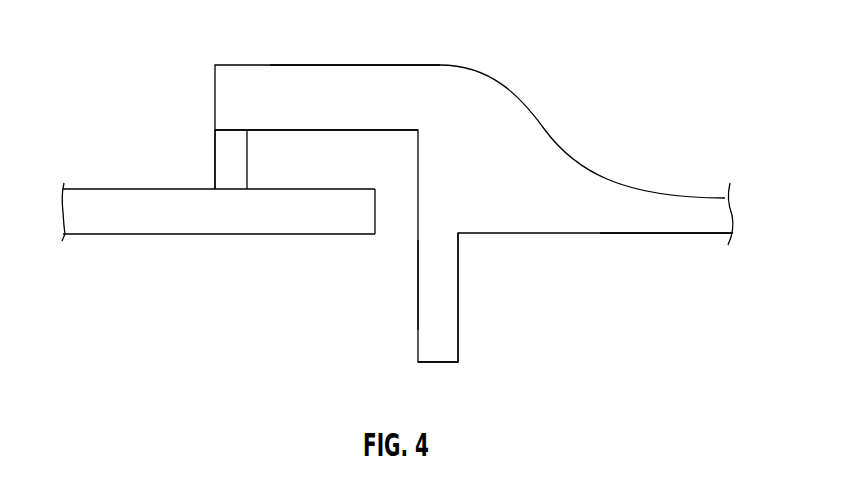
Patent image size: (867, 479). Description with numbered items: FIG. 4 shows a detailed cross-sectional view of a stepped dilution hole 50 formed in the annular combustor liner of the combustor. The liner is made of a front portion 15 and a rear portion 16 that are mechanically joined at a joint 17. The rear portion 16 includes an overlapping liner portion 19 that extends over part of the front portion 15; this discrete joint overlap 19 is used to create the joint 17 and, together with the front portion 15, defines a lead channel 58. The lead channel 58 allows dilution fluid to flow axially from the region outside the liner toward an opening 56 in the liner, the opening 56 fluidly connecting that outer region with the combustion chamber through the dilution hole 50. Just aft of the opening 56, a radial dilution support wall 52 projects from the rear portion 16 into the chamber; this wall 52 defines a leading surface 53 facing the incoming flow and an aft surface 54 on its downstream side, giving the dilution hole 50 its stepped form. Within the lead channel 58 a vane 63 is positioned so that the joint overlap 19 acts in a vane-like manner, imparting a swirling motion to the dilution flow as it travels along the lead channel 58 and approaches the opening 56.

The front portion 15 is at (193, 234).
The rear portion 16 is at (630, 234).
The joint 17 is at (524, 62).
The overlapping liner portion 19 is at (270, 65).
The dilution hole 50 is at (178, 129).
The radial dilution support wall 52 is at (458, 313).
The leading surface 53 is at (417, 280).
The aft surface 54 is at (458, 255).
The opening 56 is at (375, 234).
The lead channel 58 is at (268, 137).
The vane 63 is at (233, 164).